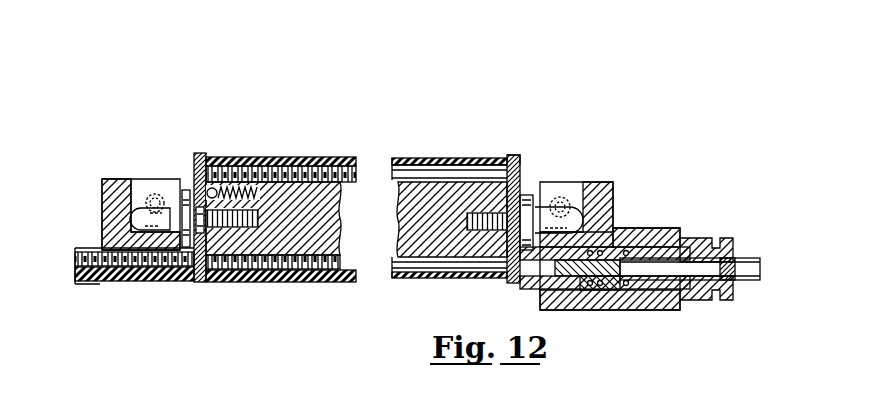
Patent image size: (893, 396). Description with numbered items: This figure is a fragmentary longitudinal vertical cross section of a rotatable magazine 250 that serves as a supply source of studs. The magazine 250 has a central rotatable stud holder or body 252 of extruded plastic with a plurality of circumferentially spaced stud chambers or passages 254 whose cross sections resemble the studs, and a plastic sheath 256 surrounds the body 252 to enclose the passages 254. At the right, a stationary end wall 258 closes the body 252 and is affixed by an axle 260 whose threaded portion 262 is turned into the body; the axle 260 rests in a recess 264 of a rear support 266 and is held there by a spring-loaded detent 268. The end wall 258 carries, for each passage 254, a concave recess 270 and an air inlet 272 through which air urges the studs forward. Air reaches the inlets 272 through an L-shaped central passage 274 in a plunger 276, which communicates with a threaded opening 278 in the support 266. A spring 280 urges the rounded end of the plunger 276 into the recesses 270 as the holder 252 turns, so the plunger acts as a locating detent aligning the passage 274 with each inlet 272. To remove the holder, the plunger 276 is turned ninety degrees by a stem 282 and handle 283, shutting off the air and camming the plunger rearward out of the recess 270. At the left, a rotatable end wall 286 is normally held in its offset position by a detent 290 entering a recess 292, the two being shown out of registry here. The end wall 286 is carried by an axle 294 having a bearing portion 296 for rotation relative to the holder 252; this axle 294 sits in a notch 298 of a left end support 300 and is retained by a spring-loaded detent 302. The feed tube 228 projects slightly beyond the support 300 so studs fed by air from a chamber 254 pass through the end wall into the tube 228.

The feed tube 228 is at (133, 282).
The magazine 250 is at (356, 210).
The stud holder or body 252 is at (343, 198).
The stud chambers or passages 254 is at (296, 157).
The plastic sheath 256 is at (290, 283).
The stationary end wall 258 is at (508, 180).
The axle 260 is at (548, 208).
The threaded portion 262 is at (485, 232).
The recess 264 is at (584, 205).
The rear support 266 is at (662, 312).
The spring-loaded detent 268 is at (566, 198).
The recess 270 is at (520, 158).
The air inlet 272 is at (498, 182).
The central passage 274 is at (572, 272).
The plunger 276 is at (526, 252).
The threaded opening 278 is at (626, 298).
The spring 280 is at (625, 248).
The stem 282 is at (700, 238).
The handle 283 is at (742, 260).
The rotatable end wall 286 is at (198, 158).
The detent 290 is at (216, 188).
The recess 292 is at (197, 205).
The axle 294 is at (150, 185).
The bearing portion 296 is at (197, 270).
The notch 298 is at (138, 209).
The left end support 300 is at (102, 186).
The spring-loaded detent 302 is at (152, 196).